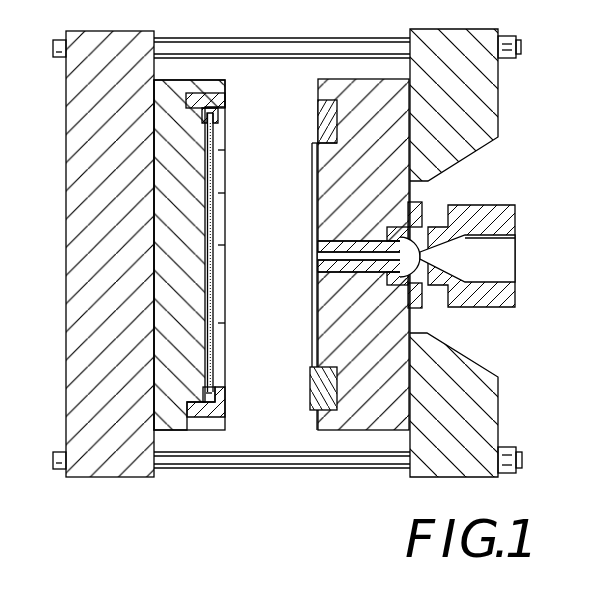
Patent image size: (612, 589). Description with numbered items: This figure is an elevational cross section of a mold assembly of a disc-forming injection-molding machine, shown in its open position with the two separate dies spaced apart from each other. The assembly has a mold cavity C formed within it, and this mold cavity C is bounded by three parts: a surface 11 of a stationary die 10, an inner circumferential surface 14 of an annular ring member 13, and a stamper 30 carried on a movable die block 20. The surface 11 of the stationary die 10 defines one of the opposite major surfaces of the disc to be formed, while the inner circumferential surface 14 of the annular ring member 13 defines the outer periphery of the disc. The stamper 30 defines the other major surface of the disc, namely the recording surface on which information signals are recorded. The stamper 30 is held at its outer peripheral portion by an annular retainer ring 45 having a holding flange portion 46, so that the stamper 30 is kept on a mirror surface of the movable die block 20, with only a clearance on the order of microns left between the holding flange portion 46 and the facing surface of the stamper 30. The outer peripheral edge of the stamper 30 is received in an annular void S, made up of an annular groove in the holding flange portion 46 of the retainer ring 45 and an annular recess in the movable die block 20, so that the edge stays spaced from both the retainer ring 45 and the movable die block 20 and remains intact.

The stationary die 10 is at (360, 412).
The surface 11 is at (312, 207).
The annular ring member 13 is at (313, 138).
The inner circumferential surface 14 is at (312, 364).
The movable die block 20 is at (175, 422).
The stamper 30 is at (210, 318).
The annular retainer ring 45 is at (205, 100).
The holding flange portion 46 is at (220, 117).
The mold cavity C is at (312, 287).
The annular void S is at (222, 390).